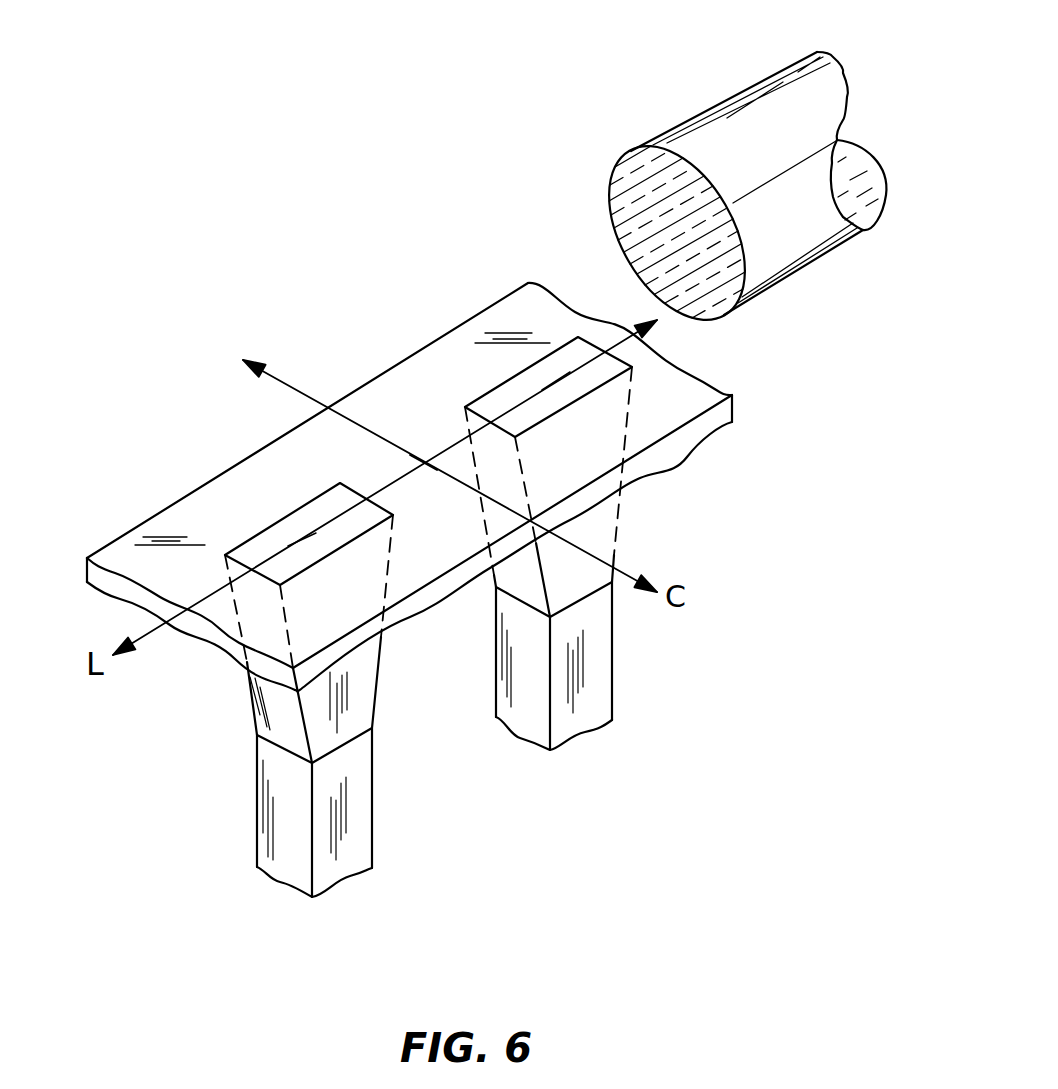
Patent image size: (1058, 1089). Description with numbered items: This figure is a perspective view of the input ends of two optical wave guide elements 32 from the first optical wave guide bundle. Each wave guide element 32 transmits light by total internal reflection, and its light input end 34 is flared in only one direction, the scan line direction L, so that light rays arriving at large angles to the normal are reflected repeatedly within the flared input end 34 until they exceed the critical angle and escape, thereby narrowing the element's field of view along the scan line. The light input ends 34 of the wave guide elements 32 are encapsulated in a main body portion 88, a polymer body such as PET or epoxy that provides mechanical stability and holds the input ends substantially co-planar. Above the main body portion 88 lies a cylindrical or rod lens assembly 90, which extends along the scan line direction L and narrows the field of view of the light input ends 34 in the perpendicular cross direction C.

The optical wave guide element 32 is at (482, 716).
The light input end 34 is at (518, 587).
The main body portion 88 is at (687, 457).
The cylindrical or rod lens assembly 90 is at (793, 277).